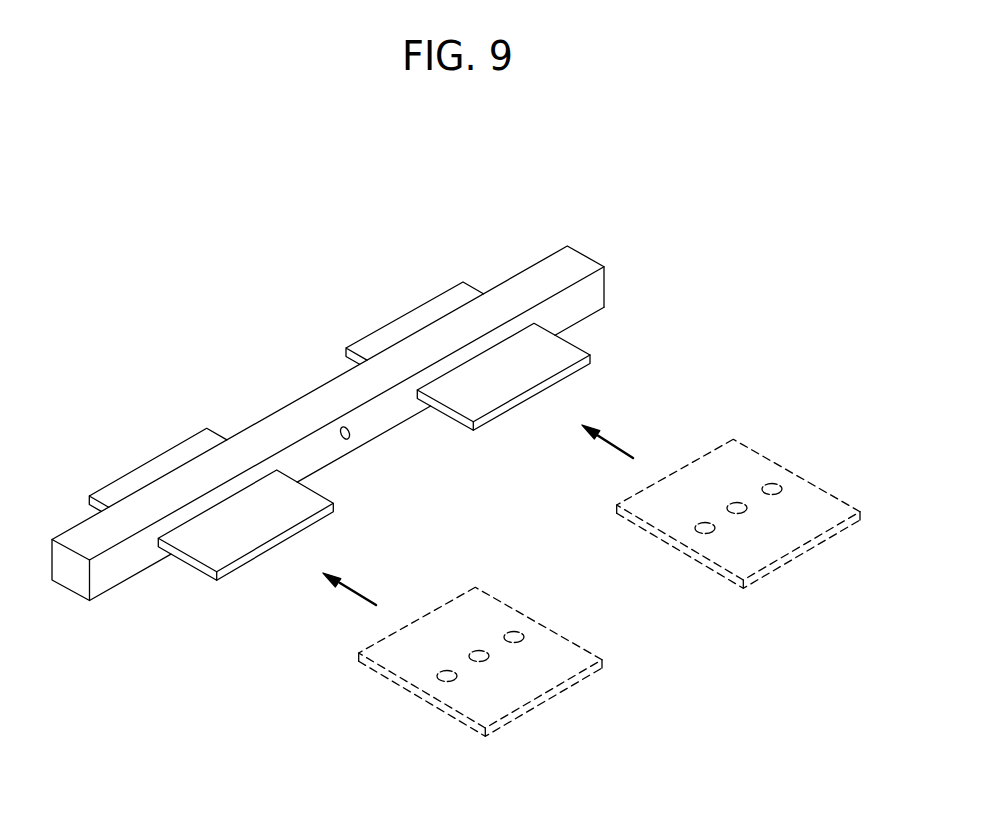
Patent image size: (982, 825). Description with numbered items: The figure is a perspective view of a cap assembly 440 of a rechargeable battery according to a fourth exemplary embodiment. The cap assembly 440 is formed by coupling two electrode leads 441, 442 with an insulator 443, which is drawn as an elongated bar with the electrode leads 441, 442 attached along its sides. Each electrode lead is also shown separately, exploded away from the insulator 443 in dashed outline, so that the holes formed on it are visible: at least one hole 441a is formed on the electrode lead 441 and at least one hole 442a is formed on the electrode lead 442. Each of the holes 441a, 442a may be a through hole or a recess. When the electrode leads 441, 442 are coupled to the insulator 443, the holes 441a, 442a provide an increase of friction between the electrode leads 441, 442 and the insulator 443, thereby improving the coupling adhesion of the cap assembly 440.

The cap assembly 440 is at (189, 262).
The electrode lead 441 is at (492, 417).
The hole 441a is at (687, 531).
The electrode lead 442 is at (238, 560).
The hole 442a is at (429, 679).
The insulator 443 is at (581, 257).